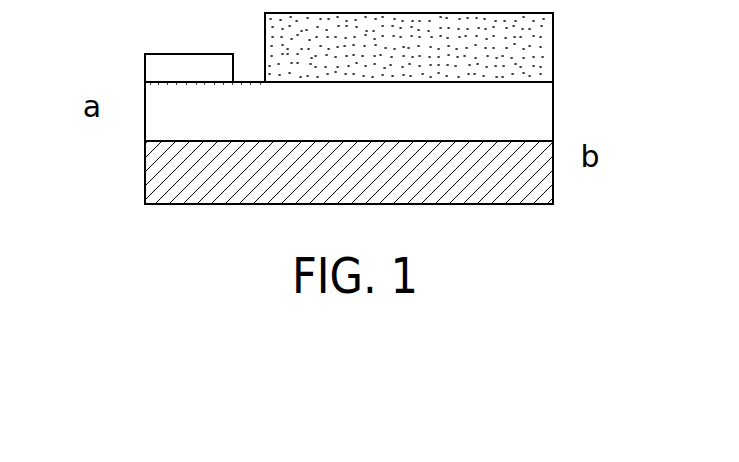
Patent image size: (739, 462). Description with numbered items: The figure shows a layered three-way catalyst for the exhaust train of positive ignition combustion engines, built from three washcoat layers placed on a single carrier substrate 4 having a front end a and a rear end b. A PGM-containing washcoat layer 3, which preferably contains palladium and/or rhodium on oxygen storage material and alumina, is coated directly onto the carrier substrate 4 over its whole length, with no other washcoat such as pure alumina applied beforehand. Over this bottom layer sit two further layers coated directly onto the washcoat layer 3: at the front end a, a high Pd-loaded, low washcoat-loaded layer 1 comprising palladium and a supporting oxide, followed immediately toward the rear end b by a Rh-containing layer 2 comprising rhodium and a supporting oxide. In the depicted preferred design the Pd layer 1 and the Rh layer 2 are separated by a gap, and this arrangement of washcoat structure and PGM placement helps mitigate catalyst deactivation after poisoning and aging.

The high Pd-loaded low washcoat-loaded layer 1 is at (175, 61).
The Rh-containing layer 2 is at (533, 42).
The PGM-containing washcoat layer 3 is at (527, 116).
The carrier substrate 4 is at (157, 171).